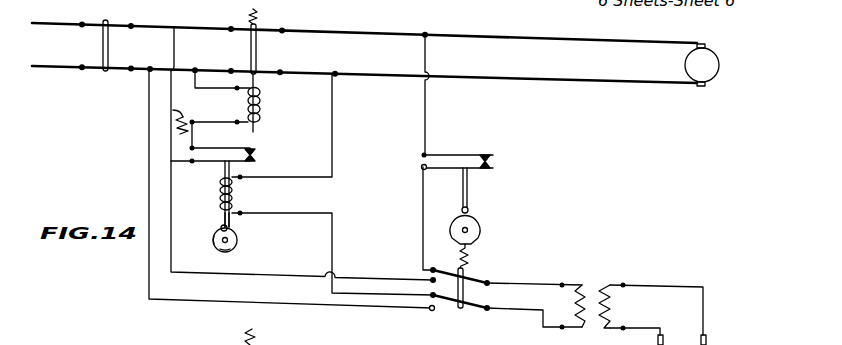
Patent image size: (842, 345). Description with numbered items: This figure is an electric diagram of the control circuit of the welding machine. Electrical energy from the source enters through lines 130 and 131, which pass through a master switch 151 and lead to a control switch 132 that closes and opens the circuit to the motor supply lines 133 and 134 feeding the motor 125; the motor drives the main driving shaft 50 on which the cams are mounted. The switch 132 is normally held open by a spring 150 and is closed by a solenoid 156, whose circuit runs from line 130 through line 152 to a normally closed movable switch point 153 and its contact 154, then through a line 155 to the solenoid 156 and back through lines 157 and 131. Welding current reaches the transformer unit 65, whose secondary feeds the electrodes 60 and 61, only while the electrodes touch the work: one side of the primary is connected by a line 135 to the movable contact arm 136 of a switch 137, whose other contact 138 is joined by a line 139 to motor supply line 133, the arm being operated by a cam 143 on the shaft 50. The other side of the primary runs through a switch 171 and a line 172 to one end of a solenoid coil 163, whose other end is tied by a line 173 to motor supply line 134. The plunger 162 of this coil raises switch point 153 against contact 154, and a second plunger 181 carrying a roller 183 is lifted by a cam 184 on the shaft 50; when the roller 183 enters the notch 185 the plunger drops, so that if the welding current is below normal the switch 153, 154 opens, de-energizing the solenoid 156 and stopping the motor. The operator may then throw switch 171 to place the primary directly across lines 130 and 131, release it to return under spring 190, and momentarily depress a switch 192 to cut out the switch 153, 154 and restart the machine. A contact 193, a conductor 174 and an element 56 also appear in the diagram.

The motor 125 is at (713, 65).
The line 130 is at (230, 22).
The line 131 is at (172, 66).
The switch 132 is at (257, 50).
The motor supply line 133 is at (504, 44).
The motor supply line 134 is at (504, 87).
The line 135 is at (423, 207).
The movable contact arm 136 is at (450, 170).
The switch 137 is at (491, 163).
The contact 138 is at (466, 156).
The line 139 is at (427, 115).
The cam 143 is at (472, 217).
The spring 150 is at (258, 15).
The master switch 151 is at (103, 45).
The line 152 is at (171, 85).
The movable switch point 153 is at (243, 170).
The contact 154 is at (253, 150).
The line 155 is at (193, 135).
The solenoid 156 is at (261, 105).
The line 157 is at (208, 89).
The plunger 162 is at (223, 167).
The solenoid coil 163 is at (233, 197).
The switch 171 is at (459, 310).
The line 172 is at (370, 295).
The line 173 is at (335, 138).
The conductor 174 is at (510, 311).
The second plunger 181 is at (231, 220).
The roller 183 is at (221, 226).
The cam 184 is at (238, 245).
The notch 185 is at (214, 235).
The spring 190 is at (470, 257).
The switch 192 is at (173, 110).
The contact 193 is at (173, 124).
The main driving shaft 50 is at (478, 228).
The cam shaft 56 is at (222, 251).
The electrode 60 is at (672, 330).
The electrode 61 is at (716, 332).
The transformer unit 65 is at (583, 292).